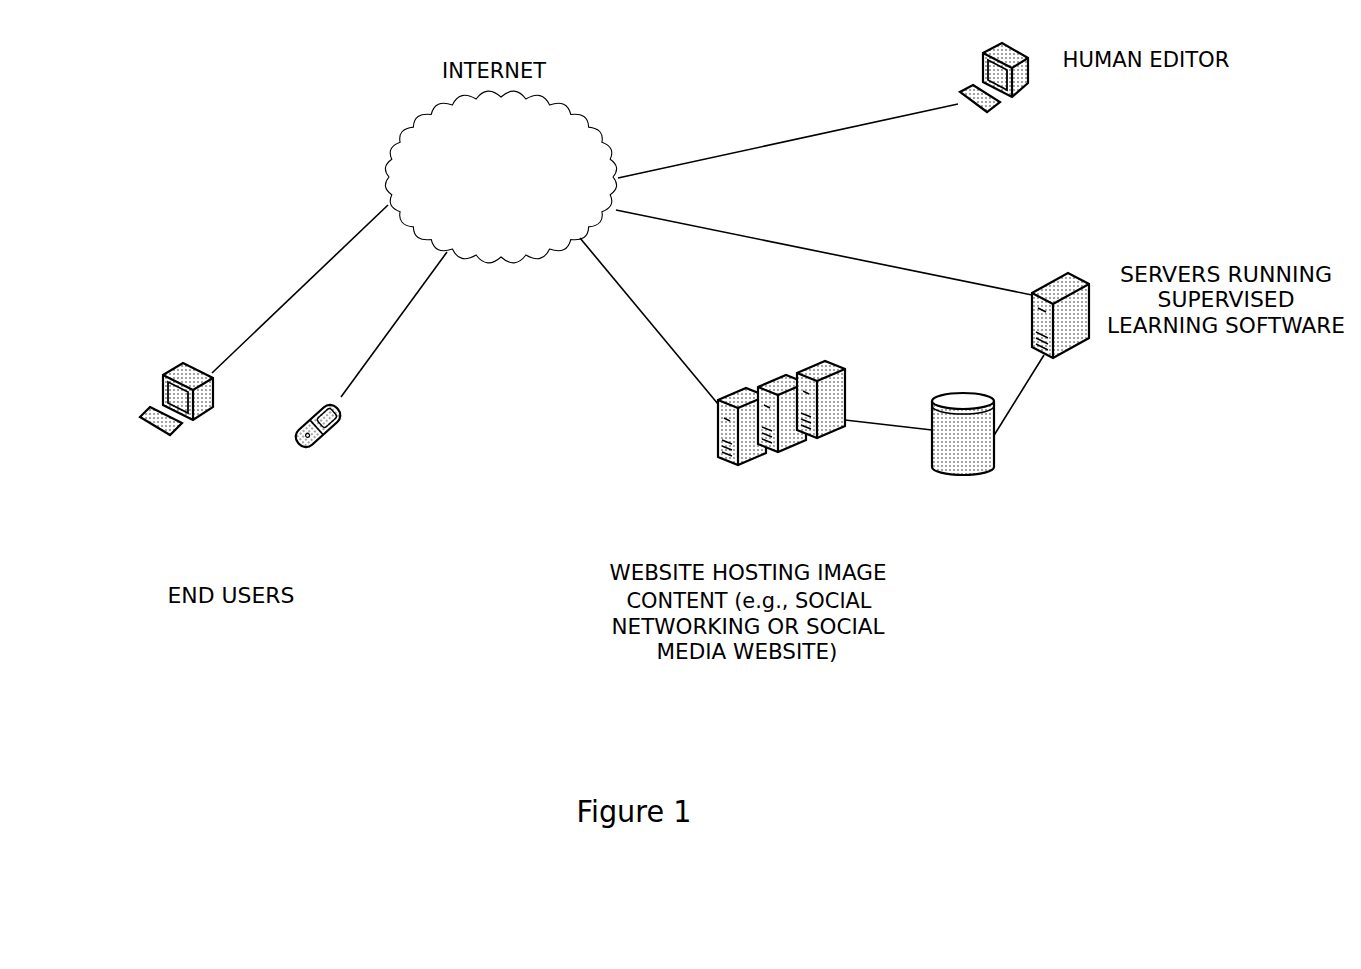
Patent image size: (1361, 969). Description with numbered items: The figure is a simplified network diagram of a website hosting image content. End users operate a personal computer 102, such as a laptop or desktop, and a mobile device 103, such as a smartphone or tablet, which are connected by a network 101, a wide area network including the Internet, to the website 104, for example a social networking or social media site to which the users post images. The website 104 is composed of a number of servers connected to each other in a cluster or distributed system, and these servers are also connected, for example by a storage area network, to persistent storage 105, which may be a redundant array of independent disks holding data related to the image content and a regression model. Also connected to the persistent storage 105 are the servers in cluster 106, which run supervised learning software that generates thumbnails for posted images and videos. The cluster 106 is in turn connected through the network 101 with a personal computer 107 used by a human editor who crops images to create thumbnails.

The network 101 is at (598, 137).
The personal computer 102 is at (193, 418).
The mobile device 103 is at (323, 443).
The website 104 is at (777, 447).
The persistent storage 105 is at (967, 475).
The cluster 106 is at (1077, 350).
The personal computer 107 is at (1010, 105).